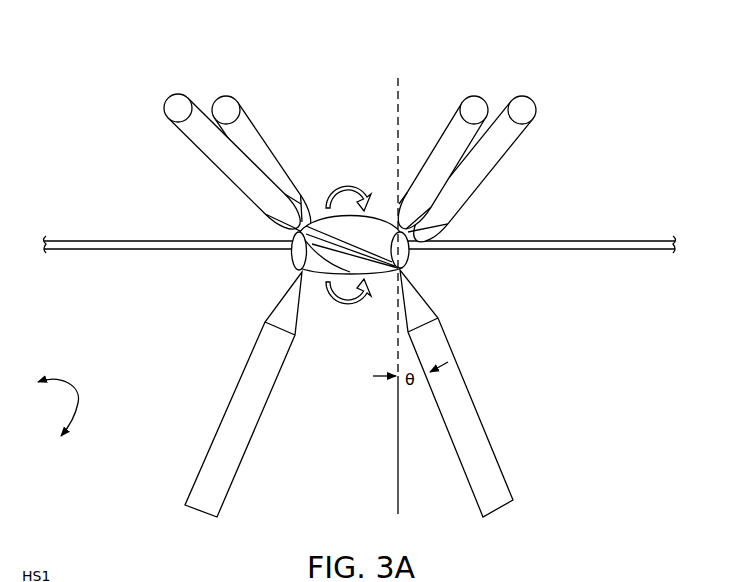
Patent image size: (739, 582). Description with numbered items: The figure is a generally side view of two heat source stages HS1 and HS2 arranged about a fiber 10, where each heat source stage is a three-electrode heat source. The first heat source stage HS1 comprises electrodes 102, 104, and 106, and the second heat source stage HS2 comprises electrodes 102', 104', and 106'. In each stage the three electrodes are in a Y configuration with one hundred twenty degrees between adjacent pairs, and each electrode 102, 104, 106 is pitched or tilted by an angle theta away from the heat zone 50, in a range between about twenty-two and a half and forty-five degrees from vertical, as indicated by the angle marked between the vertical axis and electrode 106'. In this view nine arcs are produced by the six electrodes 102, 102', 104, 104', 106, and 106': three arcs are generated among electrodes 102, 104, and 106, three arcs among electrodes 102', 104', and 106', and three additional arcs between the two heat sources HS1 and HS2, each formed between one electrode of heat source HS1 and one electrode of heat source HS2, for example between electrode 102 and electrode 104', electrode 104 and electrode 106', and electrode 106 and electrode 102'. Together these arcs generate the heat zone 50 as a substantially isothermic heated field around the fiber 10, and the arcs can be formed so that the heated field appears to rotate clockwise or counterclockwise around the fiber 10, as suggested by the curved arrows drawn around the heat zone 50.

The fiber 10 is at (116, 240).
The heat zone 50 is at (284, 263).
The electrode 102 is at (264, 163).
The electrode 104 is at (222, 161).
The electrode 102' is at (490, 169).
The electrode 104' is at (463, 162).
The electrode 106 is at (236, 394).
The electrode 106' is at (465, 393).
The heat source stage HS1 is at (149, 101).
The heat source stage HS2 is at (549, 98).